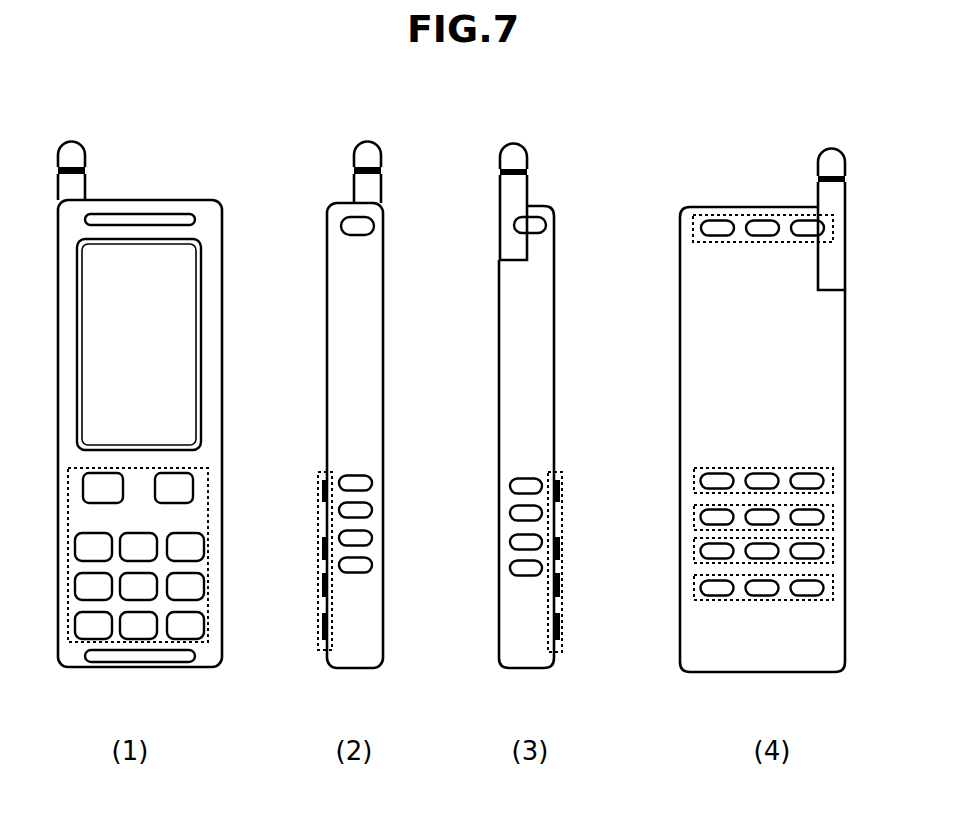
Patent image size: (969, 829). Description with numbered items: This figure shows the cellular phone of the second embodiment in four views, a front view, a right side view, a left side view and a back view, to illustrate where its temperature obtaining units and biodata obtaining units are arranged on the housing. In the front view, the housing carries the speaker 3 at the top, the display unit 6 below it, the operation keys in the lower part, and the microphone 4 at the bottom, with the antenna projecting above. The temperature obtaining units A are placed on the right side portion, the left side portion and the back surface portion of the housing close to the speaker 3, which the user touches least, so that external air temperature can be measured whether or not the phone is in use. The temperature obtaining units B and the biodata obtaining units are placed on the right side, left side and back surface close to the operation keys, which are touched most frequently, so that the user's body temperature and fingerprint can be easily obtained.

The speaker 3 is at (115, 213).
The microphone 4 is at (95, 663).
The display unit 6 is at (201, 275).